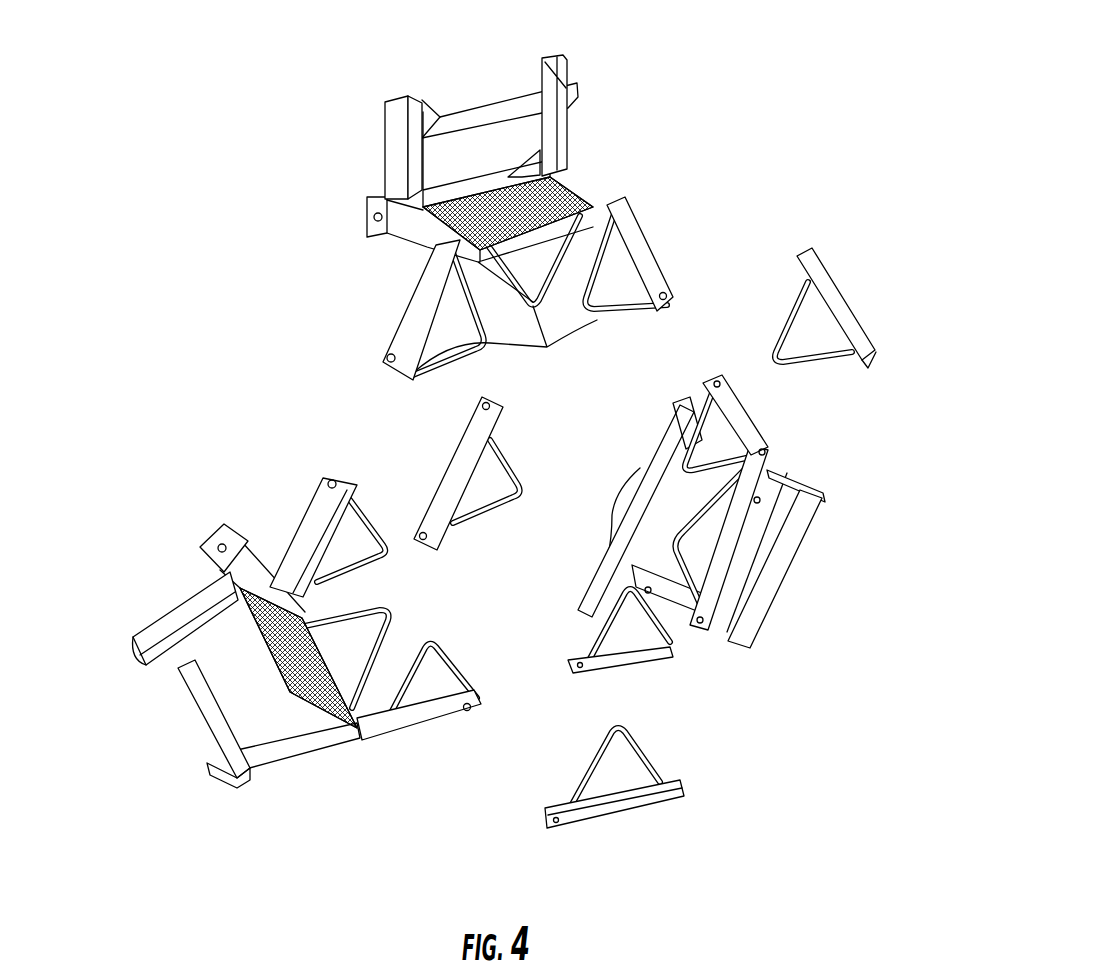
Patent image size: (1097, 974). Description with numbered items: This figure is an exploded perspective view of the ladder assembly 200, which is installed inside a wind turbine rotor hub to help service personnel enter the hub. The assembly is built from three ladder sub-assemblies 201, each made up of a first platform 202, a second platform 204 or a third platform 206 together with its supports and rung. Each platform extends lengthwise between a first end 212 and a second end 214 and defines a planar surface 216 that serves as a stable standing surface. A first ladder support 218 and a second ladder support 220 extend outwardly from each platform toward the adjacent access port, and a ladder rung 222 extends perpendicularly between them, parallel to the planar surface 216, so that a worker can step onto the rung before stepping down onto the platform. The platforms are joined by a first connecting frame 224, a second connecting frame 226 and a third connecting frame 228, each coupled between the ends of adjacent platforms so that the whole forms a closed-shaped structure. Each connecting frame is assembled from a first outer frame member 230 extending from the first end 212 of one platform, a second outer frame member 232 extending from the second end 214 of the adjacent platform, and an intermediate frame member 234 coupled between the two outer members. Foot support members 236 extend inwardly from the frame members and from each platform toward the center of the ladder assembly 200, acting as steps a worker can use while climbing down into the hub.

The ladder assembly 200 is at (832, 99).
The ladder sub-assembly 201 is at (326, 166).
The first platform 202 is at (561, 196).
The second platform 204 is at (207, 581).
The third platform 206 is at (787, 483).
The first end 212 is at (430, 233).
The second end 214 is at (600, 203).
The planar surface 216 is at (470, 196).
The first ladder support 218 is at (398, 128).
The second ladder support 220 is at (580, 117).
The ladder rung 222 is at (482, 112).
The first connecting frame 224 is at (724, 240).
The second connecting frame 226 is at (306, 421).
The third connecting frame 228 is at (494, 748).
The first outer frame member 230 is at (410, 320).
The second outer frame member 232 is at (647, 251).
The intermediate frame member 234 is at (838, 298).
The foot support member 236 is at (550, 349).